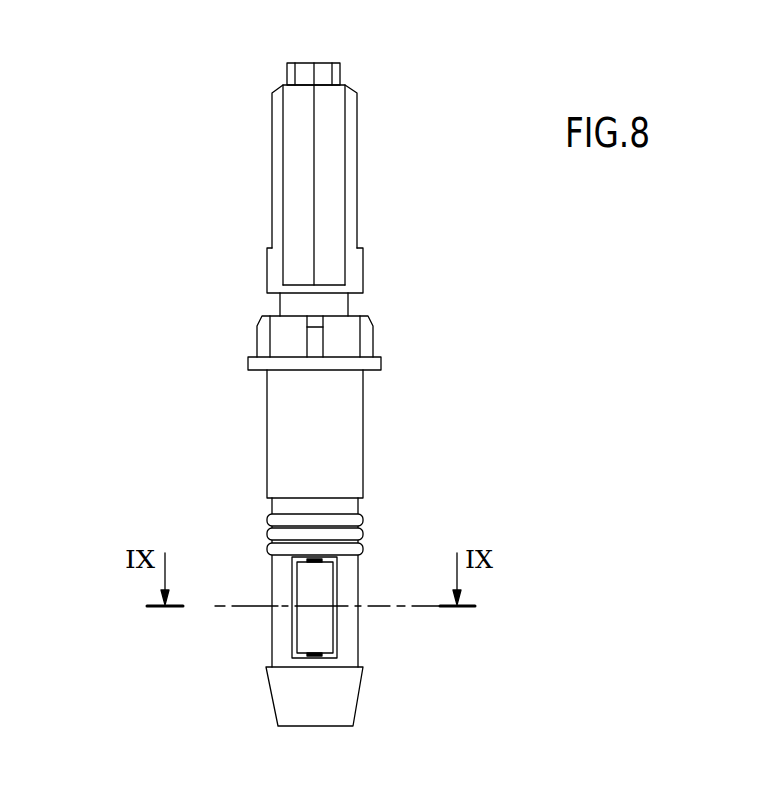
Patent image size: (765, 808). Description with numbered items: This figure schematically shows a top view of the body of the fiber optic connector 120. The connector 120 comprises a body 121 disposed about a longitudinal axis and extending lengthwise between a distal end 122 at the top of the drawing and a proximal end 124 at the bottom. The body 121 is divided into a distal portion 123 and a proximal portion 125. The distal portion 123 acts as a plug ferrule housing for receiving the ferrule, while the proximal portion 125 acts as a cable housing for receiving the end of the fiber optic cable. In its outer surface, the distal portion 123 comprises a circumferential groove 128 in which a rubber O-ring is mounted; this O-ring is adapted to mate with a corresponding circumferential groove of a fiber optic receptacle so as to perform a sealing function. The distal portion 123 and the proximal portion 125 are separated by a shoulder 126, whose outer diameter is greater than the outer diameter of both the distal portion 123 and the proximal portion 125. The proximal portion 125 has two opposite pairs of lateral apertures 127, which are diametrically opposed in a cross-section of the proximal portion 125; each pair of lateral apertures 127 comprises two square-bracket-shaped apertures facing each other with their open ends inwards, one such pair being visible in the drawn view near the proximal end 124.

The connector 120 is at (121, 134).
The body 121 is at (315, 372).
The distal end 122 is at (342, 70).
The distal portion 123 is at (357, 212).
The proximal end 124 is at (272, 703).
The proximal portion 125 is at (363, 447).
The shoulder 126 is at (248, 358).
The lateral apertures 127 is at (294, 622).
The circumferential groove 128 is at (349, 305).